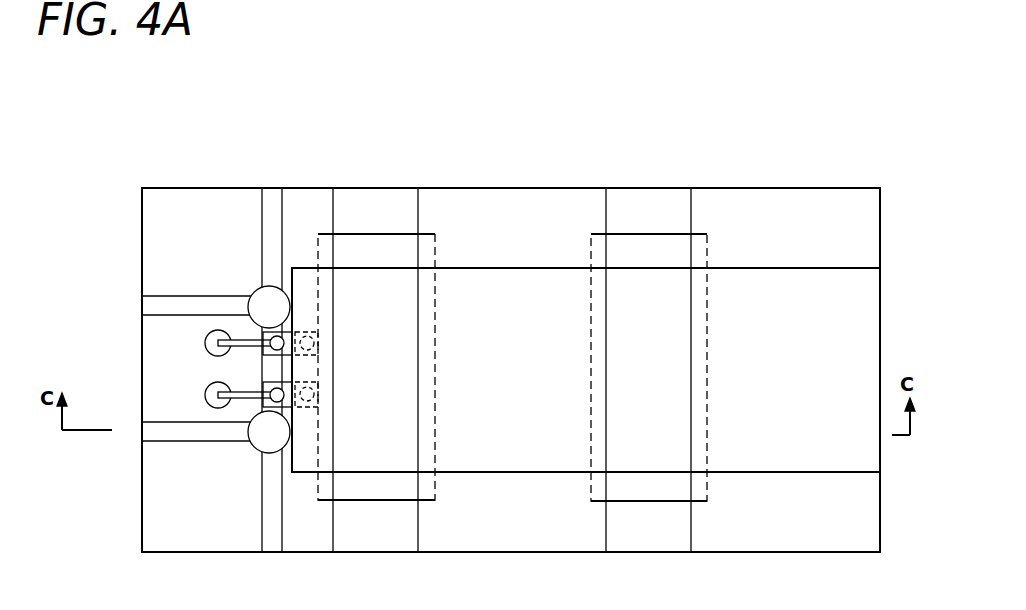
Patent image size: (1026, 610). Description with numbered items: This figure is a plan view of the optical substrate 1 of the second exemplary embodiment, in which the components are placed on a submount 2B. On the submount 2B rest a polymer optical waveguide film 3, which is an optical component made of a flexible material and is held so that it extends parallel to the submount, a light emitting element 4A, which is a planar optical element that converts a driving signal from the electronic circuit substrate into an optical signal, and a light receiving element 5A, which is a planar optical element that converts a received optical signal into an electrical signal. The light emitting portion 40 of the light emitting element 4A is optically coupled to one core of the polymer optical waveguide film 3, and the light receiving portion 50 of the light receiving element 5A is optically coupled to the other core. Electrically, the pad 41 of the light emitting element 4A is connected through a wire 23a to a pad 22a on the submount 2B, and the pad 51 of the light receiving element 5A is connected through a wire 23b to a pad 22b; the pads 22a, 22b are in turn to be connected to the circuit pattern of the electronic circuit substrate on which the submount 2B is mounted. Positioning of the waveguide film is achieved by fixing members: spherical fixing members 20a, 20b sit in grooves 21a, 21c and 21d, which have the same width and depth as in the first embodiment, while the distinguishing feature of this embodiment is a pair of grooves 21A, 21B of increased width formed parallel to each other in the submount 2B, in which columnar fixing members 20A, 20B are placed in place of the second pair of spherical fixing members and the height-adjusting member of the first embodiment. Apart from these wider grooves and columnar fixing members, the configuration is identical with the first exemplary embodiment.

The optical module 1 is at (780, 78).
The submount 2B is at (565, 208).
The polymer optical waveguide film 3 is at (470, 260).
The fixing member 20a is at (250, 290).
The fixing member 20b is at (263, 442).
The columnar fixing member 20A is at (395, 483).
The columnar fixing member 20B is at (677, 483).
The groove 21a is at (267, 200).
The groove 21A is at (350, 207).
The groove 21B is at (622, 222).
The groove 21c is at (146, 305).
The groove 21d is at (153, 432).
The pad 22a is at (205, 343).
The pad 22b is at (205, 395).
The wire 23a is at (252, 340).
The wire 23b is at (257, 395).
The light emitting element 4A is at (318, 342).
The light receiving element 5A is at (318, 392).
The light emitting portion 40 is at (309, 330).
The light receiving portion 50 is at (301, 403).
The pad 41 is at (250, 357).
The pad 51 is at (293, 382).